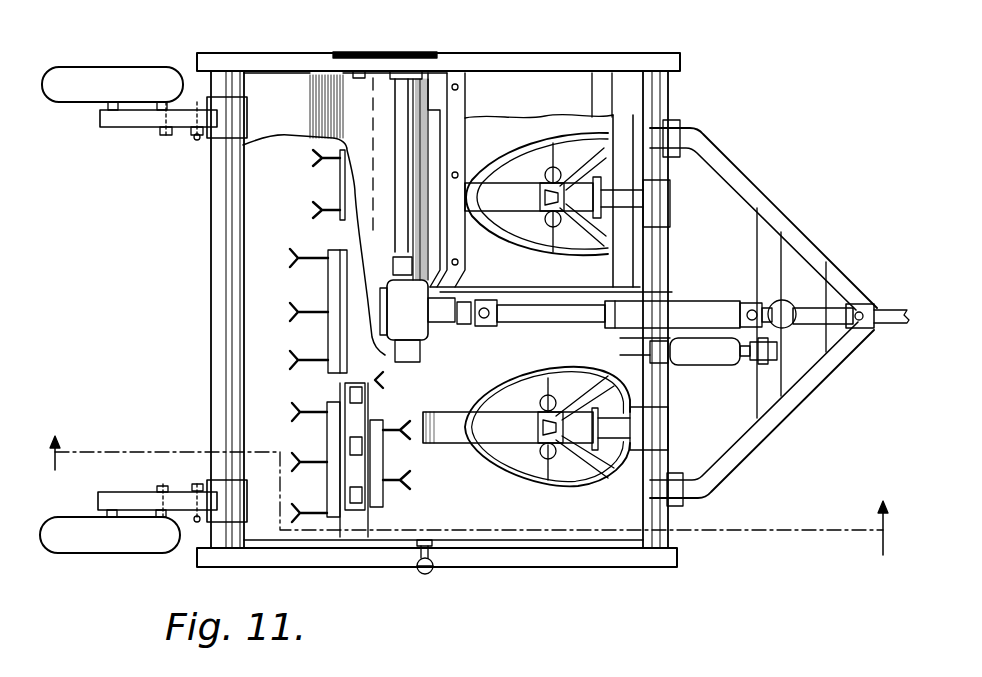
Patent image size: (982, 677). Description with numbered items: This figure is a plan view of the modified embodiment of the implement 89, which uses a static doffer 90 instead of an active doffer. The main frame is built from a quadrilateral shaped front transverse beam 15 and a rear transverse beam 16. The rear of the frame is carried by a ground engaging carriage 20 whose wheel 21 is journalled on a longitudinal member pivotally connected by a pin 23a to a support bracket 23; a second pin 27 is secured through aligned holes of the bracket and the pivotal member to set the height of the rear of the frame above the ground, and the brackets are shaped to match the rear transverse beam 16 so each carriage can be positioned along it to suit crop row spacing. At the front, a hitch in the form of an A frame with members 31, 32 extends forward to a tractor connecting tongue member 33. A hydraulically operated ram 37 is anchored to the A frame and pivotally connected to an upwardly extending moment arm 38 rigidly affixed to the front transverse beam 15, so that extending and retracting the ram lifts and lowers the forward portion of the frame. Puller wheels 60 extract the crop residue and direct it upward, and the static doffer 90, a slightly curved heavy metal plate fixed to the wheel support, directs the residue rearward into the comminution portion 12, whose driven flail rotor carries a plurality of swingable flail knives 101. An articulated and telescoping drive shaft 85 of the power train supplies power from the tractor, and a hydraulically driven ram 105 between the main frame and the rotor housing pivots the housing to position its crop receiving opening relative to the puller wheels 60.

The comminution portion 12 is at (470, 495).
The front transverse beam 15 is at (660, 252).
The rear transverse beam 16 is at (215, 325).
The ground engaging carriage 20 is at (152, 135).
The wheel 21 is at (95, 67).
The support bracket 23 is at (195, 100).
The pin 23a is at (197, 142).
The pin 27 is at (166, 136).
The A frame member 31 is at (765, 440).
The A frame member 32 is at (752, 190).
The tongue member 33 is at (848, 290).
The hydraulically operated ram 37 is at (728, 356).
The moment arm 38 is at (665, 362).
The puller wheels 60 is at (518, 149).
The drive shaft 85 is at (718, 307).
The implement 89 is at (503, 94).
The static doffer 90 is at (506, 205).
The flail knives 101 is at (300, 356).
The hydraulically driven ram 105 is at (425, 575).